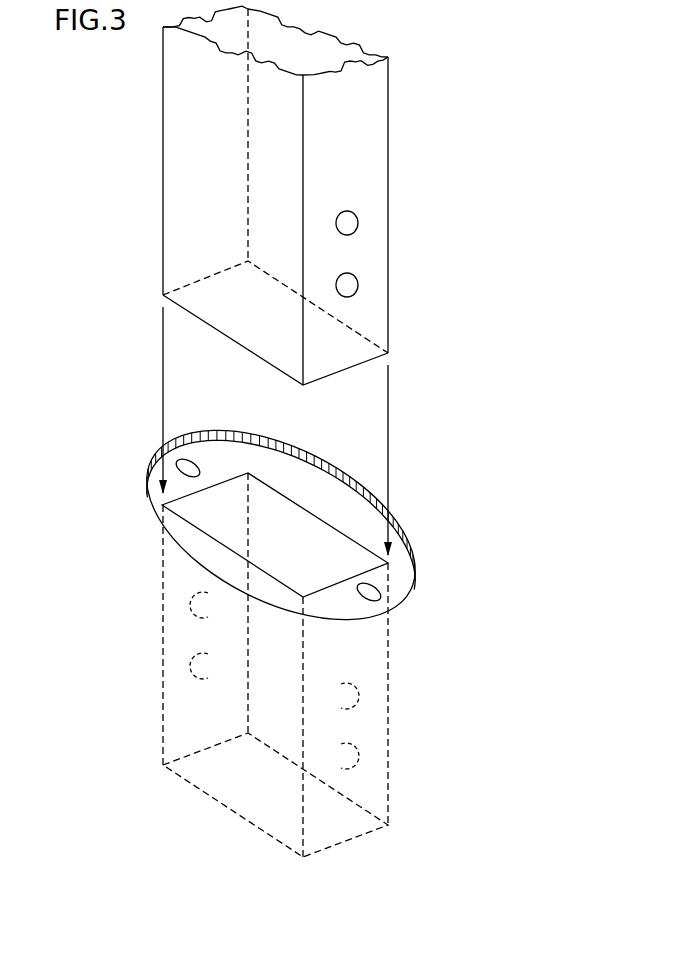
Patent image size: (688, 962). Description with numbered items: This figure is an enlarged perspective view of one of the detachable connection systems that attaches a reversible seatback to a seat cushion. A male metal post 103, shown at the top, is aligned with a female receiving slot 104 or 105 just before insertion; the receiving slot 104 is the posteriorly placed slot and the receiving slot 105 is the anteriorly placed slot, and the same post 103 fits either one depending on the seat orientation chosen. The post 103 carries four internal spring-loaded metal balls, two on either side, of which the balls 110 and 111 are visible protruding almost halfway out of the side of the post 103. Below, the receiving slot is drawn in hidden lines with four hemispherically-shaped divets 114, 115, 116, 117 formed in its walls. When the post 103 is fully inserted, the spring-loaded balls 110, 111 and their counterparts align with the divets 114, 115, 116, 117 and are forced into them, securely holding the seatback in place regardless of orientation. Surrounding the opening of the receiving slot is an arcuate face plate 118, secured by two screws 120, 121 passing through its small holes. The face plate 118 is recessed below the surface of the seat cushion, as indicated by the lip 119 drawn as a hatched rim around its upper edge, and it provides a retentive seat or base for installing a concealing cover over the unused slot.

The metal post member 103 is at (370, 173).
The posteriorly placed receiving slot 104 is at (353, 653).
The anteriorly placed receiving slot 105 is at (477, 4).
The spring-loaded metal ball 110 is at (349, 224).
The spring-loaded metal ball 111 is at (349, 286).
The hemispherically-shaped divet 114 is at (365, 697).
The hemispherically-shaped divet 115 is at (365, 755).
The hemispherically-shaped divet 116 is at (185, 602).
The hemispherically-shaped divet 117 is at (185, 658).
The arcuate face plate 118 is at (362, 528).
The lip 119 is at (355, 477).
The screw 120 is at (388, 588).
The screw 121 is at (162, 450).